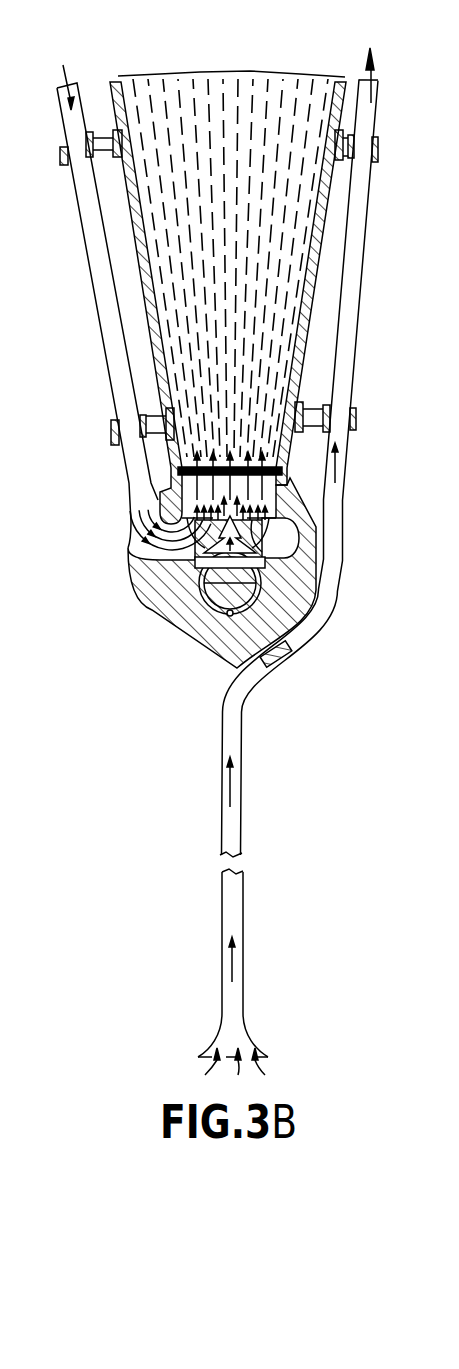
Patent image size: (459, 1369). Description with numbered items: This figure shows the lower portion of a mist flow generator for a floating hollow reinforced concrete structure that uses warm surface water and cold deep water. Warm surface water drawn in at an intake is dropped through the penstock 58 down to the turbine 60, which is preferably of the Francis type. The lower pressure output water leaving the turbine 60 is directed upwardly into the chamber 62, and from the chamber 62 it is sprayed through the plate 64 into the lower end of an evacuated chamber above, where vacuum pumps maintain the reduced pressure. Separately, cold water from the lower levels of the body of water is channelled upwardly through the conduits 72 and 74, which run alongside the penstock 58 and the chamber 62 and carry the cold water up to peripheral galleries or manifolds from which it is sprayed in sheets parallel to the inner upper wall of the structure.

The penstock 58 is at (132, 457).
The turbine 60 is at (213, 556).
The chamber 62 is at (262, 502).
The plate 64 is at (232, 468).
The conduit 72 is at (235, 930).
The conduit 74 is at (343, 392).